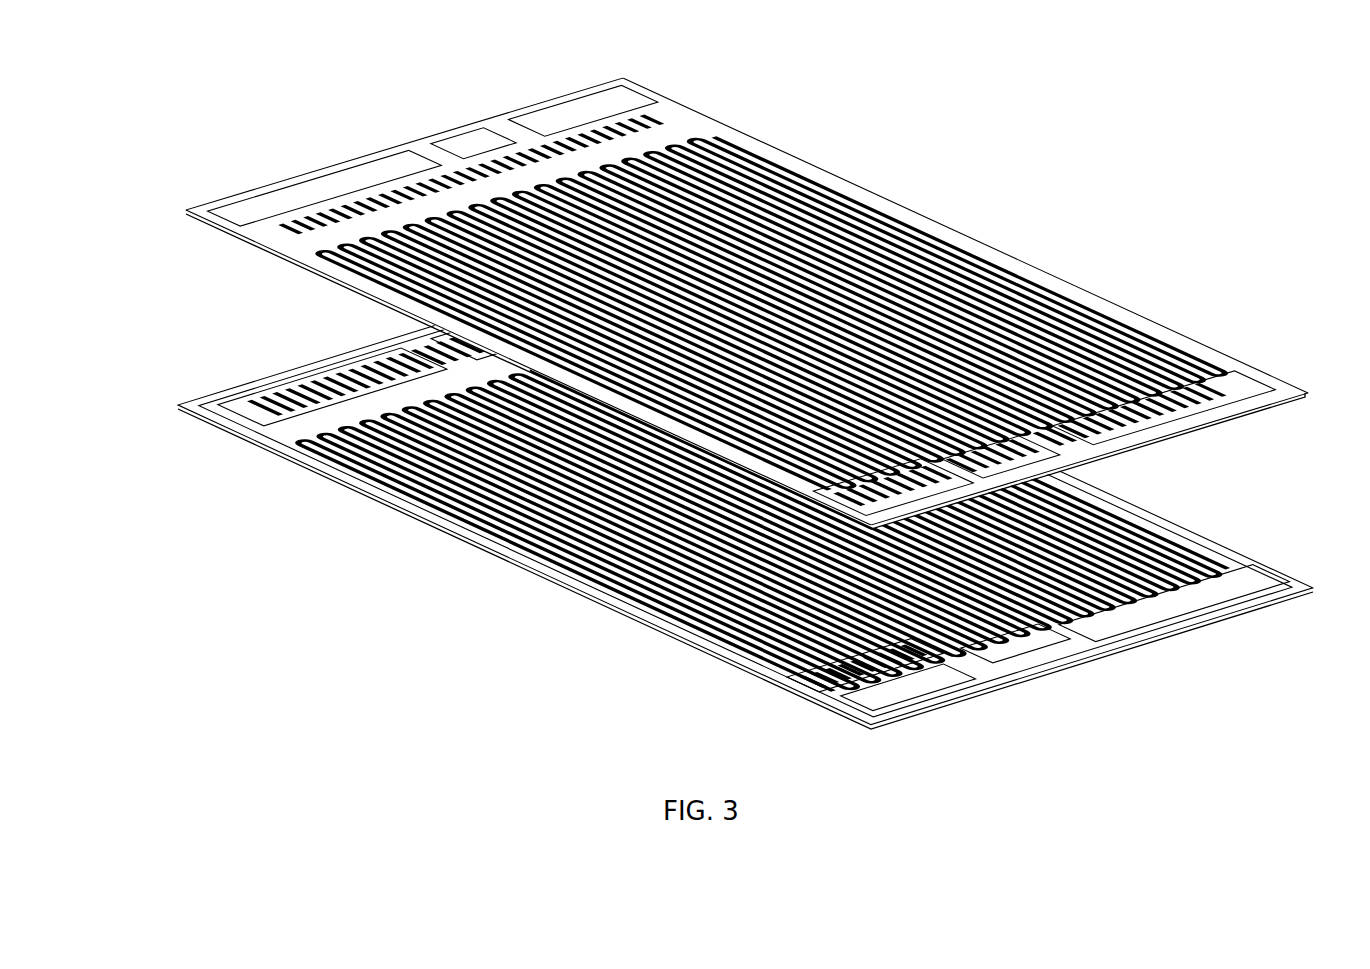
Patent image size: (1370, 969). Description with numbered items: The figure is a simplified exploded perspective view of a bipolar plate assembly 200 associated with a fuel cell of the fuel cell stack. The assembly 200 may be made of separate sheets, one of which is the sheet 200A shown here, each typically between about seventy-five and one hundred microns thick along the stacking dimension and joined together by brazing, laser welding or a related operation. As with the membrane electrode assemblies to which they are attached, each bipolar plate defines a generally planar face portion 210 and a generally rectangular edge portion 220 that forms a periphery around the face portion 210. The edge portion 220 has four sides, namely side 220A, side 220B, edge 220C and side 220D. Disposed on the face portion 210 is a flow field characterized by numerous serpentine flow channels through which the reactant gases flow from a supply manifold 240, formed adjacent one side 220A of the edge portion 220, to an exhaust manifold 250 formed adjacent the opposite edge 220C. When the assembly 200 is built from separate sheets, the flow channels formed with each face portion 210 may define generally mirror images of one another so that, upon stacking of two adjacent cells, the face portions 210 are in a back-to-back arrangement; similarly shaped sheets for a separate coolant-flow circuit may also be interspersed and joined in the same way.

The bipolar plate assembly 200 is at (1283, 558).
The sheet 200A is at (755, 280).
The face portion 210 is at (771, 314).
The edge portion 220 is at (742, 301).
The side of edge portion 220A is at (404, 144).
The side of edge portion 220B is at (965, 235).
The opposite edge 220C is at (1089, 459).
The side of edge portion 220D is at (528, 367).
The supply manifold 240 is at (582, 110).
The exhaust manifold 250 is at (1262, 272).